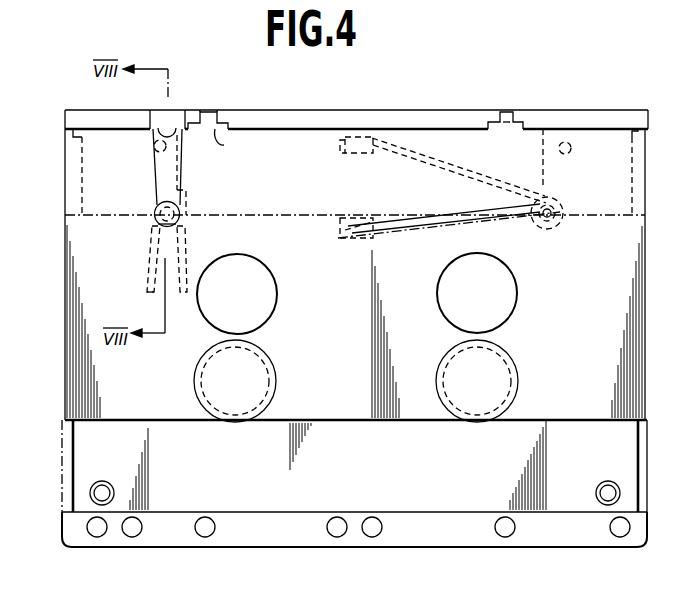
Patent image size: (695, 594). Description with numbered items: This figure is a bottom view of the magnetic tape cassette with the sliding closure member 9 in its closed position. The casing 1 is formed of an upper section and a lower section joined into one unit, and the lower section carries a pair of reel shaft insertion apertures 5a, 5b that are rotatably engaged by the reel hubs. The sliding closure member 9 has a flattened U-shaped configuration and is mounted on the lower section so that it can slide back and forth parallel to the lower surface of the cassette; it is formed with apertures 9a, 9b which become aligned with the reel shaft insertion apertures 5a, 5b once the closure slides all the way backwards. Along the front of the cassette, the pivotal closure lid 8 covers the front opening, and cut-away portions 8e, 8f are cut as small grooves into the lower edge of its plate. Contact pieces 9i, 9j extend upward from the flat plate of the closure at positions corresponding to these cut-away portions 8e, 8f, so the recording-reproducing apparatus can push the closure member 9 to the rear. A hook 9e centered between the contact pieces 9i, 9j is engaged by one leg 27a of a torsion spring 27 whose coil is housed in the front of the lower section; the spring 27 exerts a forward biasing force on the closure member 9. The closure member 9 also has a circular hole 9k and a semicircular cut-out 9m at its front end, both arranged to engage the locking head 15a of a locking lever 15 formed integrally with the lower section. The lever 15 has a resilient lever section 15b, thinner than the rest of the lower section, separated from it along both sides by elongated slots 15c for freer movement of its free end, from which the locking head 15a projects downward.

The casing 1 is at (310, 536).
The reel shaft insertion aperture 5a is at (265, 374).
The reel shaft insertion aperture 5b is at (508, 374).
The pivotal closure lid 8 is at (600, 118).
The cut-away portion 8e is at (207, 112).
The cut-away portion 8f is at (500, 112).
The sliding closure member 9 is at (68, 310).
The aperture 9a is at (272, 287).
The aperture 9b is at (512, 286).
The hook 9e is at (343, 152).
The contact piece 9i is at (224, 145).
The contact piece 9j is at (514, 122).
The circular hole 9k is at (163, 208).
The semicircular cut-out 9m is at (163, 126).
The locking lever 15 is at (197, 225).
The locking head 15a is at (153, 218).
The resilient lever section 15b is at (158, 278).
The elongated slot 15c is at (186, 258).
The torsion spring 27 is at (556, 223).
The leg 27a is at (435, 157).